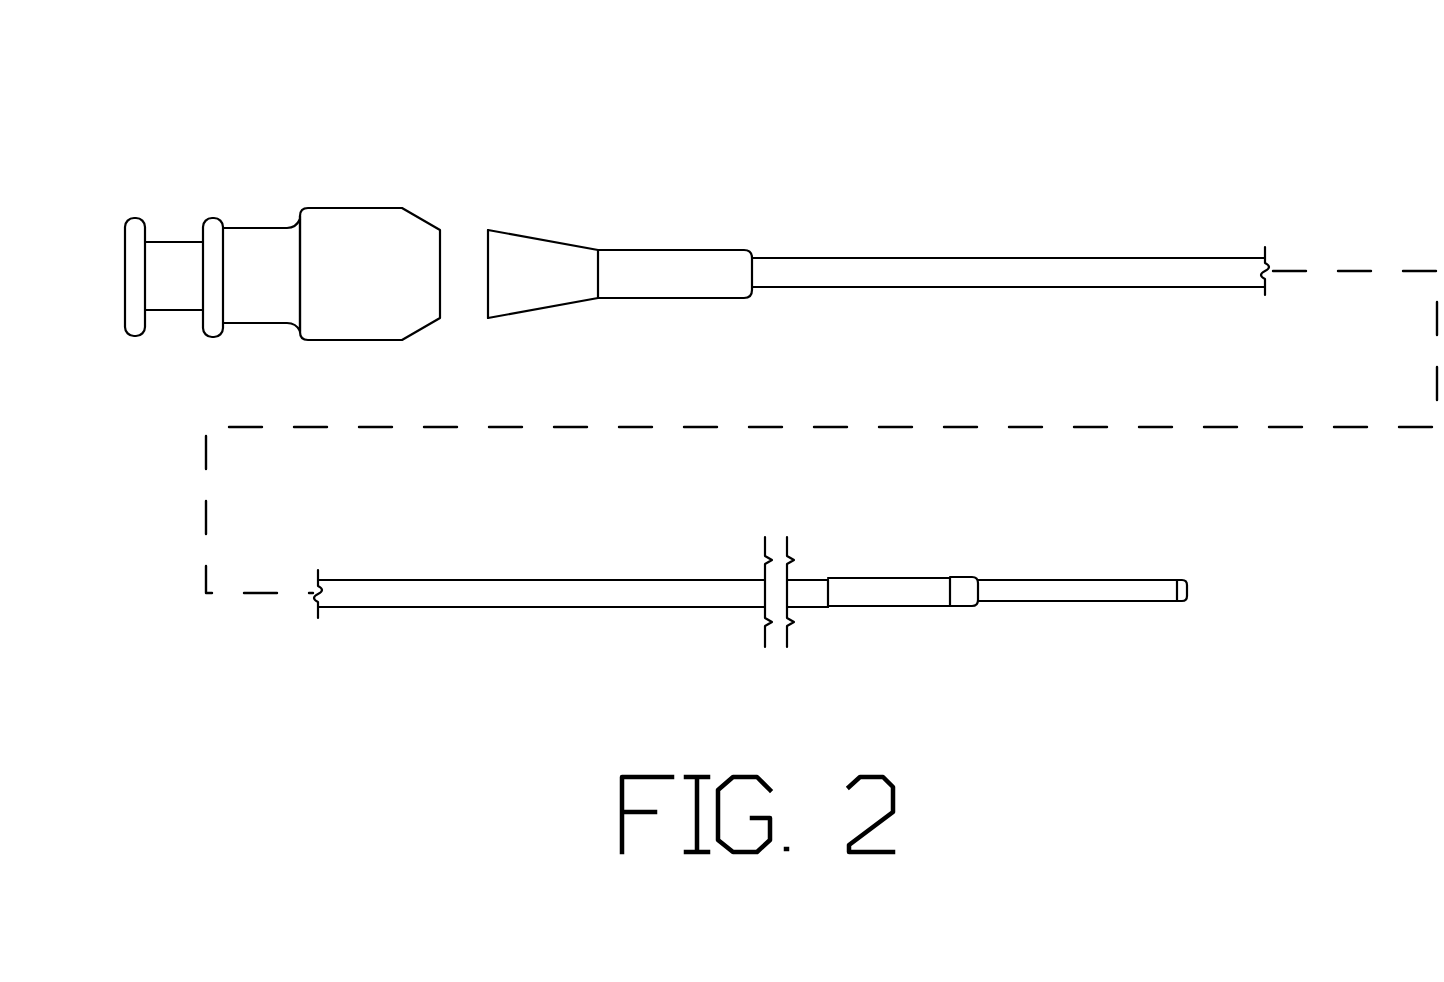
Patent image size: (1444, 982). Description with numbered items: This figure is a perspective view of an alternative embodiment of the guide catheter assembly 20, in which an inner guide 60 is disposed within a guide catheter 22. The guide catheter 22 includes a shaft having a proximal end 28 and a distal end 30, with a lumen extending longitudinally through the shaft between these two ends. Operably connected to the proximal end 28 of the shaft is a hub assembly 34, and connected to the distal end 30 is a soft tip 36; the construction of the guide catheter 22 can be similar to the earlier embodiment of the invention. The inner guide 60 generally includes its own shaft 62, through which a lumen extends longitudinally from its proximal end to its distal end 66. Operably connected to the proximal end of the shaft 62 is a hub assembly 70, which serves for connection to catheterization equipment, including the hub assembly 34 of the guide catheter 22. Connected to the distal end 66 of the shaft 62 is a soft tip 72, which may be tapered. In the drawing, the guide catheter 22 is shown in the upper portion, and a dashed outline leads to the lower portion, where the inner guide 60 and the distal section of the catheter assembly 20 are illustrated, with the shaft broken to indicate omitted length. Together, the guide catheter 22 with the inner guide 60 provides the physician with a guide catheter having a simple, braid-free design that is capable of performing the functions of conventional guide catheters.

The guide catheter assembly 20 is at (212, 105).
The guide catheter 22 is at (765, 150).
The proximal end 28 is at (797, 288).
The distal end 30 is at (823, 607).
The hub assembly 34 is at (370, 340).
The soft tip 36 is at (963, 605).
The inner guide member 60 is at (1052, 578).
The shaft 62 is at (1085, 601).
The distal end 66 is at (1155, 602).
The hub assembly 70 is at (178, 310).
The soft tip 72 is at (1187, 598).